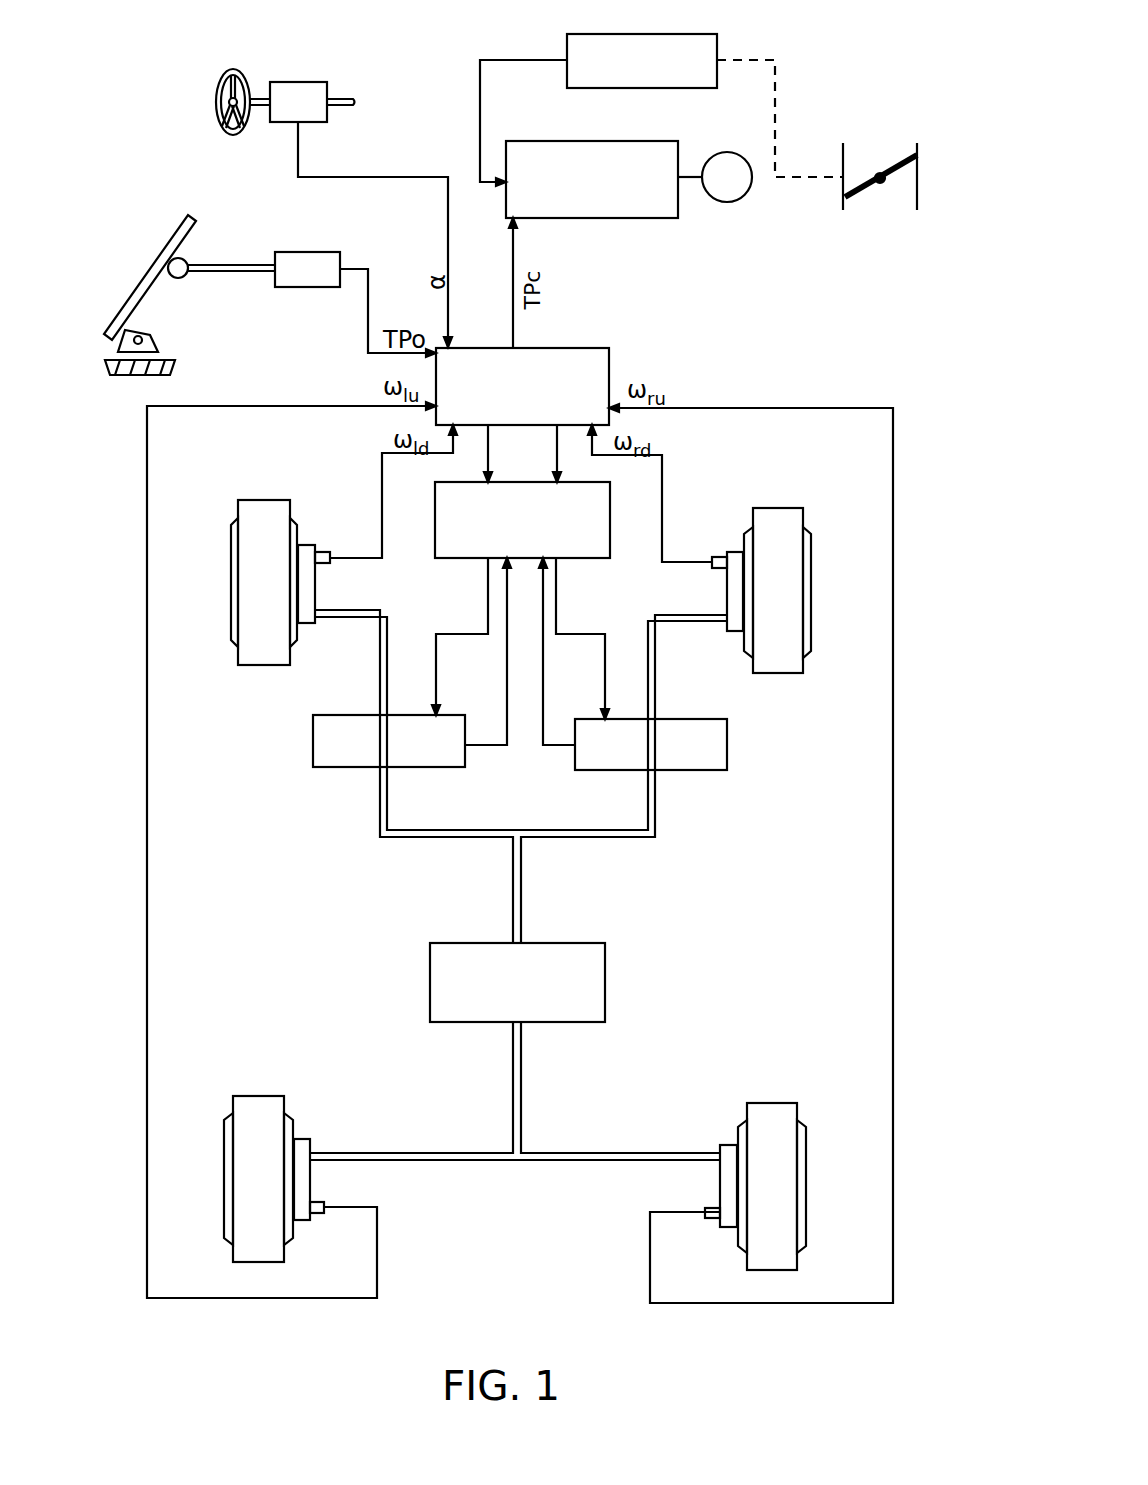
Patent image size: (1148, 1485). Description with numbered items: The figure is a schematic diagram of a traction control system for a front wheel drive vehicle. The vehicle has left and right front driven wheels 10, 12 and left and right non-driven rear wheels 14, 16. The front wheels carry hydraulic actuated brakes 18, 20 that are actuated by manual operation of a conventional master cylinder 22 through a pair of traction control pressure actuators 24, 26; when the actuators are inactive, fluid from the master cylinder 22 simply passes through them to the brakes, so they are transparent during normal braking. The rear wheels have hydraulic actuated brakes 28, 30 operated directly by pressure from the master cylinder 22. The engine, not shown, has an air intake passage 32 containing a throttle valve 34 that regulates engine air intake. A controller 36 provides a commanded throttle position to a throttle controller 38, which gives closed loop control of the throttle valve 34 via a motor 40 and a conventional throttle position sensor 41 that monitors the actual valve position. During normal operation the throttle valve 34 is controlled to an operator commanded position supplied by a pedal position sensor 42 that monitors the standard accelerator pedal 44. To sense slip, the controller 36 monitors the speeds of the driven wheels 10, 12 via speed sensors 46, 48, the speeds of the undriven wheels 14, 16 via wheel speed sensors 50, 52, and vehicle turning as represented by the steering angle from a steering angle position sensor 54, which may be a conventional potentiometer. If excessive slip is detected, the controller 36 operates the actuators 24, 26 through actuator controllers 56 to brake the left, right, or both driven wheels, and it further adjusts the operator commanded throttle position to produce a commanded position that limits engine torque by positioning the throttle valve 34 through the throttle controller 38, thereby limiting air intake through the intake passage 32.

The left front driven wheel 10 is at (257, 500).
The right front driven wheel 12 is at (770, 515).
The left non-driven wheel 14 is at (277, 1108).
The right non-driven wheel 16 is at (772, 1128).
The hydraulic actuated brake 18 is at (317, 598).
The hydraulic actuated brake 20 is at (733, 600).
The master cylinder 22 is at (567, 958).
The traction control pressure actuator 24 is at (322, 760).
The traction control pressure actuator 26 is at (718, 760).
The hydraulic actuated brake 28 is at (302, 1187).
The hydraulic actuated brake 30 is at (728, 1182).
The air intake passage 32 is at (845, 155).
The throttle valve 34 is at (893, 163).
The controller 36 is at (598, 363).
The throttle controller 38 is at (622, 148).
The motor 40 is at (725, 202).
The throttle position sensor 41 is at (567, 58).
The pedal position sensor 42 is at (320, 255).
The accelerator pedal 44 is at (157, 267).
The speed sensor 46 is at (325, 552).
The speed sensor 48 is at (722, 553).
The wheel speed sensor 50 is at (313, 1212).
The wheel speed sensor 52 is at (712, 1220).
The steering angle position sensor 54 is at (305, 83).
The actuator controllers 56 is at (448, 513).